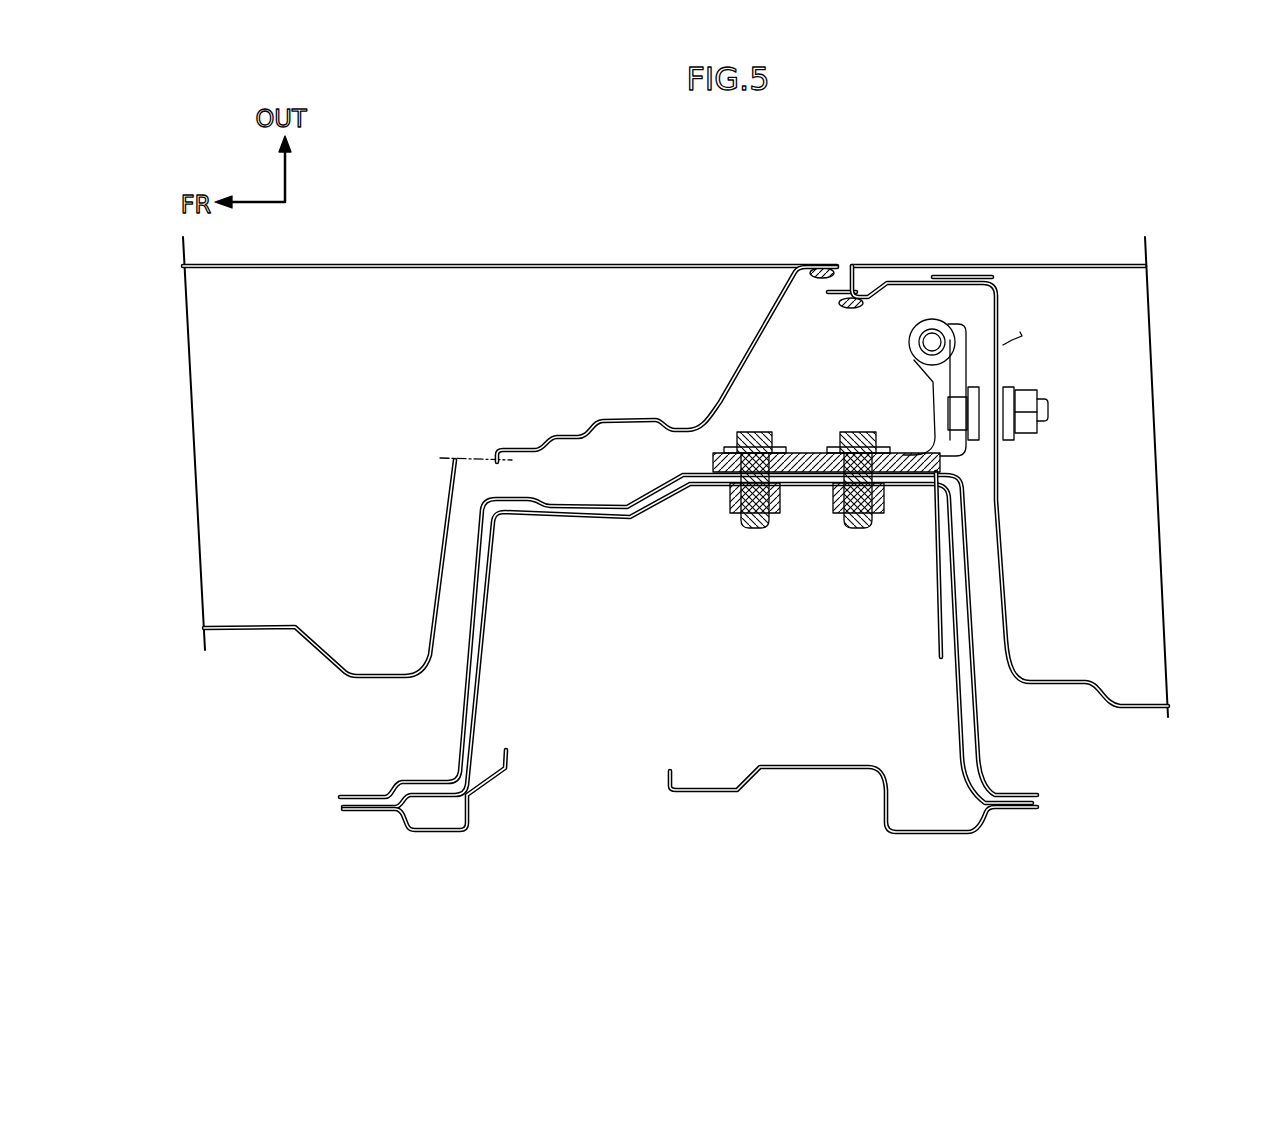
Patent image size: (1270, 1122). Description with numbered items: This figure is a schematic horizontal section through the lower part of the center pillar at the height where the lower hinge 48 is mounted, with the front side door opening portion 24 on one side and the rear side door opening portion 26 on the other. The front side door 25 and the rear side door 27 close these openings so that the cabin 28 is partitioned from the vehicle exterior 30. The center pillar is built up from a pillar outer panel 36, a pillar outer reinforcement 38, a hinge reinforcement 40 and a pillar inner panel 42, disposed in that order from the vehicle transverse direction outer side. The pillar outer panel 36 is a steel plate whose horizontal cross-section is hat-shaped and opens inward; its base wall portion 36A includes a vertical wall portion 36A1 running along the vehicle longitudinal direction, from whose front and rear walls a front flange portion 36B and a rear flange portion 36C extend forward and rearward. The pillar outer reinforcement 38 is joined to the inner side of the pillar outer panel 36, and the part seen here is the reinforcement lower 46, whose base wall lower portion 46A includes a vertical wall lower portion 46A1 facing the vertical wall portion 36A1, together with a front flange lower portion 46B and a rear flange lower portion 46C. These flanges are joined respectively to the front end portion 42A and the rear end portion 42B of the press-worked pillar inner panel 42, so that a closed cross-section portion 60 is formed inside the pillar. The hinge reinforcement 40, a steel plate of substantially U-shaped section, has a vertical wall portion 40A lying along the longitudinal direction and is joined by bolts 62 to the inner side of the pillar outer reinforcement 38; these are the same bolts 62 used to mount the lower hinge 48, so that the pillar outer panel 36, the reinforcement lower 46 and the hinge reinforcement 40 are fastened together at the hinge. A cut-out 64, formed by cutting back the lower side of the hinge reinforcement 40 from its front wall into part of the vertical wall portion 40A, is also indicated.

The front side door opening portion 24 is at (226, 886).
The front side door 25 is at (480, 264).
The rear side door opening portion 26 is at (1244, 847).
The rear side door 27 is at (1085, 264).
The cabin 28 is at (746, 926).
The vehicle exterior 30 is at (806, 186).
The pillar outer panel 36 is at (962, 559).
The base wall portion 36A is at (697, 474).
The vertical wall portion 36A1 is at (692, 400).
The front flange portion 36B is at (352, 795).
The rear flange portion 36C is at (1033, 794).
The pillar outer reinforcement 38 is at (1032, 602).
The hinge reinforcement 40 is at (932, 576).
The vertical wall portion 40A is at (808, 486).
The pillar inner panel 42 is at (697, 789).
The front end portion 42A is at (363, 811).
The rear end portion 42B is at (1025, 810).
The reinforcement lower 46 is at (951, 629).
The base wall lower portion 46A is at (603, 519).
The vertical wall lower portion 46A1 is at (599, 548).
The front flange lower portion 46B is at (341, 802).
The rear flange lower portion 46C is at (1035, 803).
The lower hinge 48 is at (908, 378).
The closed cross-section portion 60 is at (753, 694).
The bolts 62 is at (755, 432).
The cut-out 64 is at (698, 480).